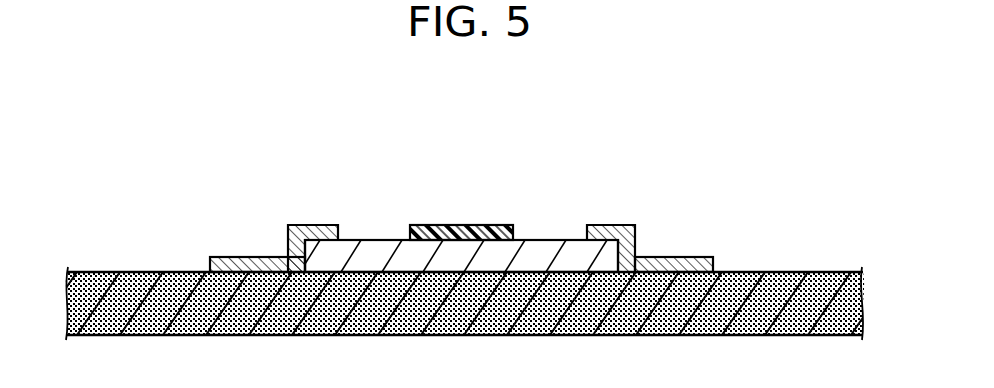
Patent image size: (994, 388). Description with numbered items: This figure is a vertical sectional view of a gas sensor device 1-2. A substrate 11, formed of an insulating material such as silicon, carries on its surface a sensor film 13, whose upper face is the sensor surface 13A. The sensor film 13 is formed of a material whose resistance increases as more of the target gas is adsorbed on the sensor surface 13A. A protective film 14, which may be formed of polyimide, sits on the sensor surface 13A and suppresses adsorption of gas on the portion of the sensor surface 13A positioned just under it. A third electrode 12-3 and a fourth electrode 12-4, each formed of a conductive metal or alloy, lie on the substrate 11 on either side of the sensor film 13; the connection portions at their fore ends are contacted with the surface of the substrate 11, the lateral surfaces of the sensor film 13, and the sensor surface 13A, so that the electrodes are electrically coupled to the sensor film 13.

The gas sensor device 1-2 is at (764, 174).
The substrate 11 is at (793, 272).
The third electrode 12-3 is at (714, 257).
The fourth electrode 12-4 is at (210, 257).
The sensor film 13 is at (595, 257).
The sensor surface 13A is at (542, 237).
The protective film 14 is at (470, 228).